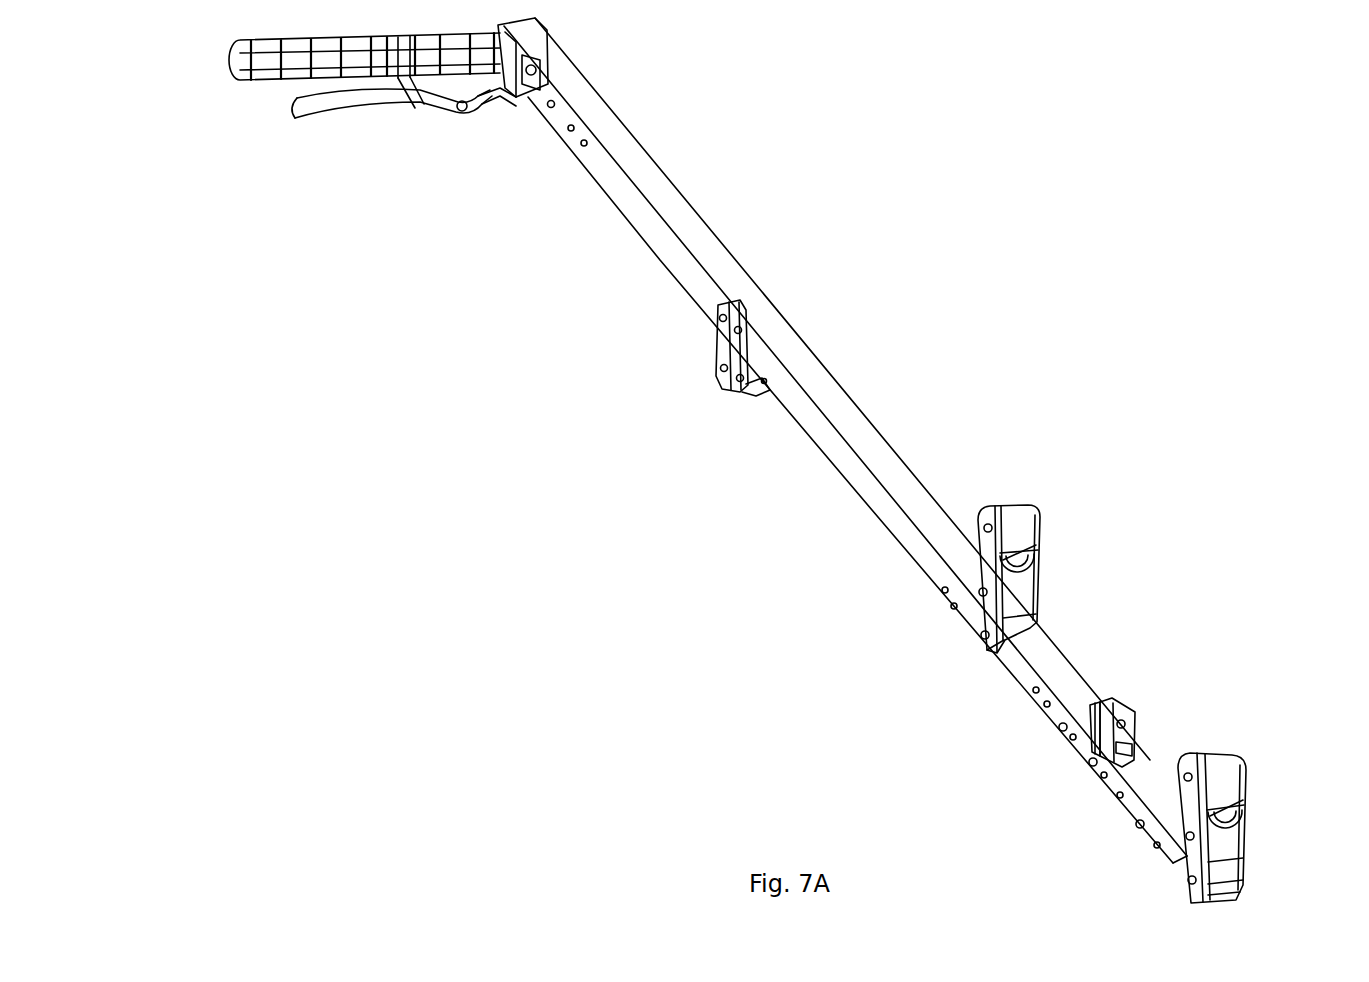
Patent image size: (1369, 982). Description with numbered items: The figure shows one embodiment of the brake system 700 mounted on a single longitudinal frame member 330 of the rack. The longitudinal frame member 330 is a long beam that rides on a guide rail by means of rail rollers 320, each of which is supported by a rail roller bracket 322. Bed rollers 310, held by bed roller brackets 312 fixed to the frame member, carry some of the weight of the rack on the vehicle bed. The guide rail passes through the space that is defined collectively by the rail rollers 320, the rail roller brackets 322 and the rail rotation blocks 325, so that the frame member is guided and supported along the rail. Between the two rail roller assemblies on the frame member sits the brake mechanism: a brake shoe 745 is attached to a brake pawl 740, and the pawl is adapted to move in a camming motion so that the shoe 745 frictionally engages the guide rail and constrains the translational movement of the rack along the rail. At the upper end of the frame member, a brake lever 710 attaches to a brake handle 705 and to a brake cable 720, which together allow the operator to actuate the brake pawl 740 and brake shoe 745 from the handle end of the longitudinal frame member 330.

The brake system 700 is at (382, 323).
The brake handle 705 is at (228, 80).
The brake lever 710 is at (368, 95).
The brake cable 720 is at (487, 125).
The longitudinal frame member 330 is at (728, 247).
The bed roller bracket 312 is at (715, 350).
The bed roller 310 is at (748, 390).
The rail roller 320 is at (1023, 504).
The rail roller bracket 322 is at (997, 562).
The rail rotation block 325 is at (1015, 610).
The brake pawl 740 is at (1125, 735).
The brake shoe 745 is at (1120, 705).